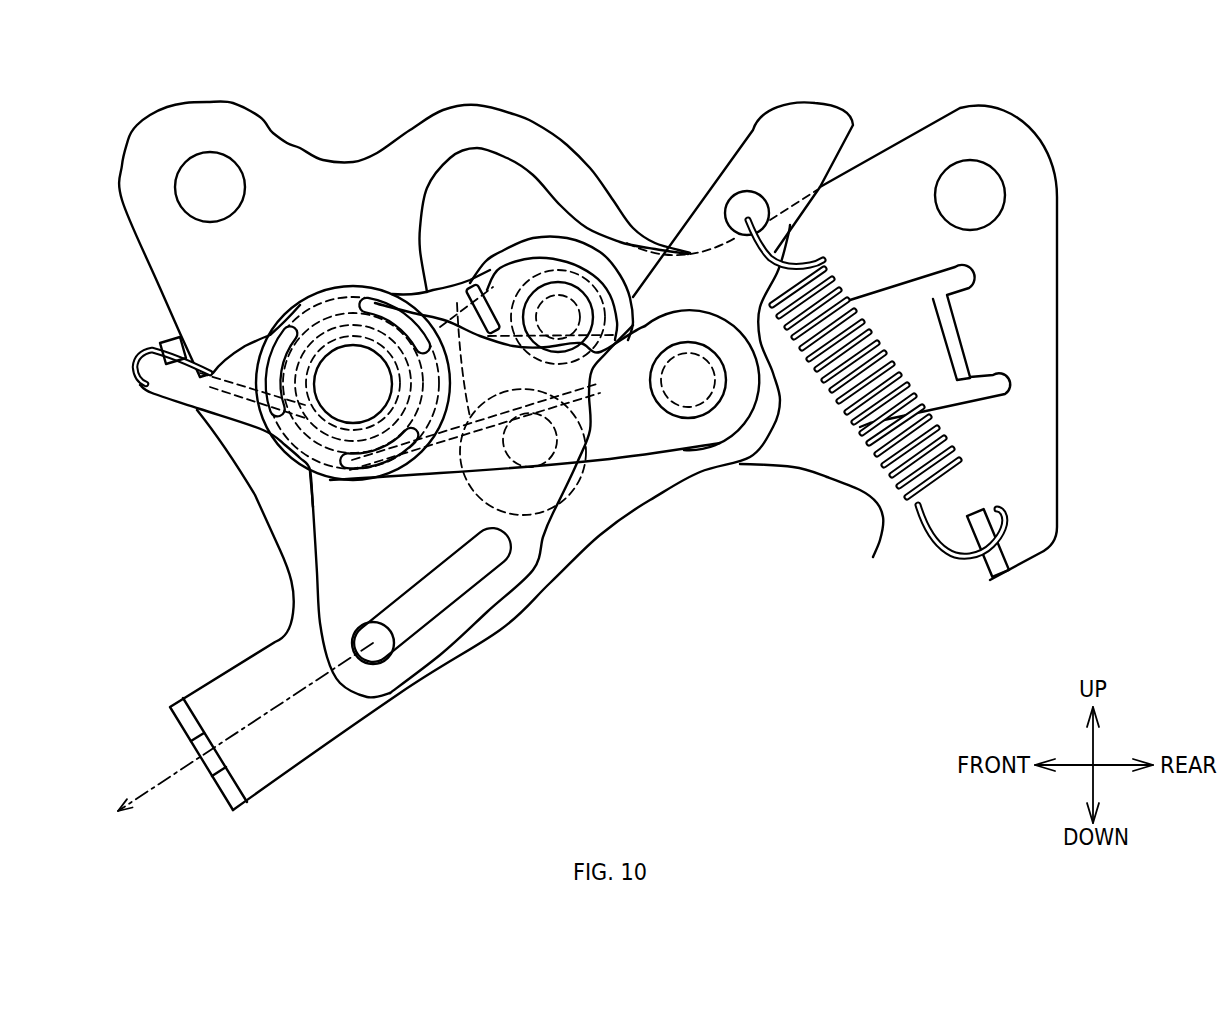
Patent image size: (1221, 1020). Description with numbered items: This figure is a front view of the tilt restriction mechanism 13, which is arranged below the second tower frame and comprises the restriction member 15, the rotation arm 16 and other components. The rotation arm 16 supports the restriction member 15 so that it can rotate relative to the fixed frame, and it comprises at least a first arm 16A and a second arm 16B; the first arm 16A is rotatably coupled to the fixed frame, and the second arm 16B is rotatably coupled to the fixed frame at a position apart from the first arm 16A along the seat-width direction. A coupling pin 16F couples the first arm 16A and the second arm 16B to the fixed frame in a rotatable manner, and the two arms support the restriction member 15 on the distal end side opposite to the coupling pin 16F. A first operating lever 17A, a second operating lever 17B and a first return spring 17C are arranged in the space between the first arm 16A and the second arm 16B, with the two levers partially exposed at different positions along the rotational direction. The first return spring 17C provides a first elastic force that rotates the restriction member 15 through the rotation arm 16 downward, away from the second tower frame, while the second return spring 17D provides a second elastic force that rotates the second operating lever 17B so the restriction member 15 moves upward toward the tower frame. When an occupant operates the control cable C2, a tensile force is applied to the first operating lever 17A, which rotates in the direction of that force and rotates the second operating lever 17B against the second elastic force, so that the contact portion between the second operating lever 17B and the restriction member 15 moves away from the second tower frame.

The tilt restriction mechanism 13 is at (886, 112).
The restriction member 15 is at (564, 282).
The rotation arm 16 is at (424, 292).
The first arm 16A is at (558, 282).
The second arm 16B is at (517, 262).
The coupling pin 16F is at (343, 408).
The first operating lever 17A is at (488, 600).
The second operating lever 17B is at (727, 170).
The first return spring 17C is at (197, 408).
The second return spring 17D is at (876, 550).
The control cable C2 is at (264, 721).